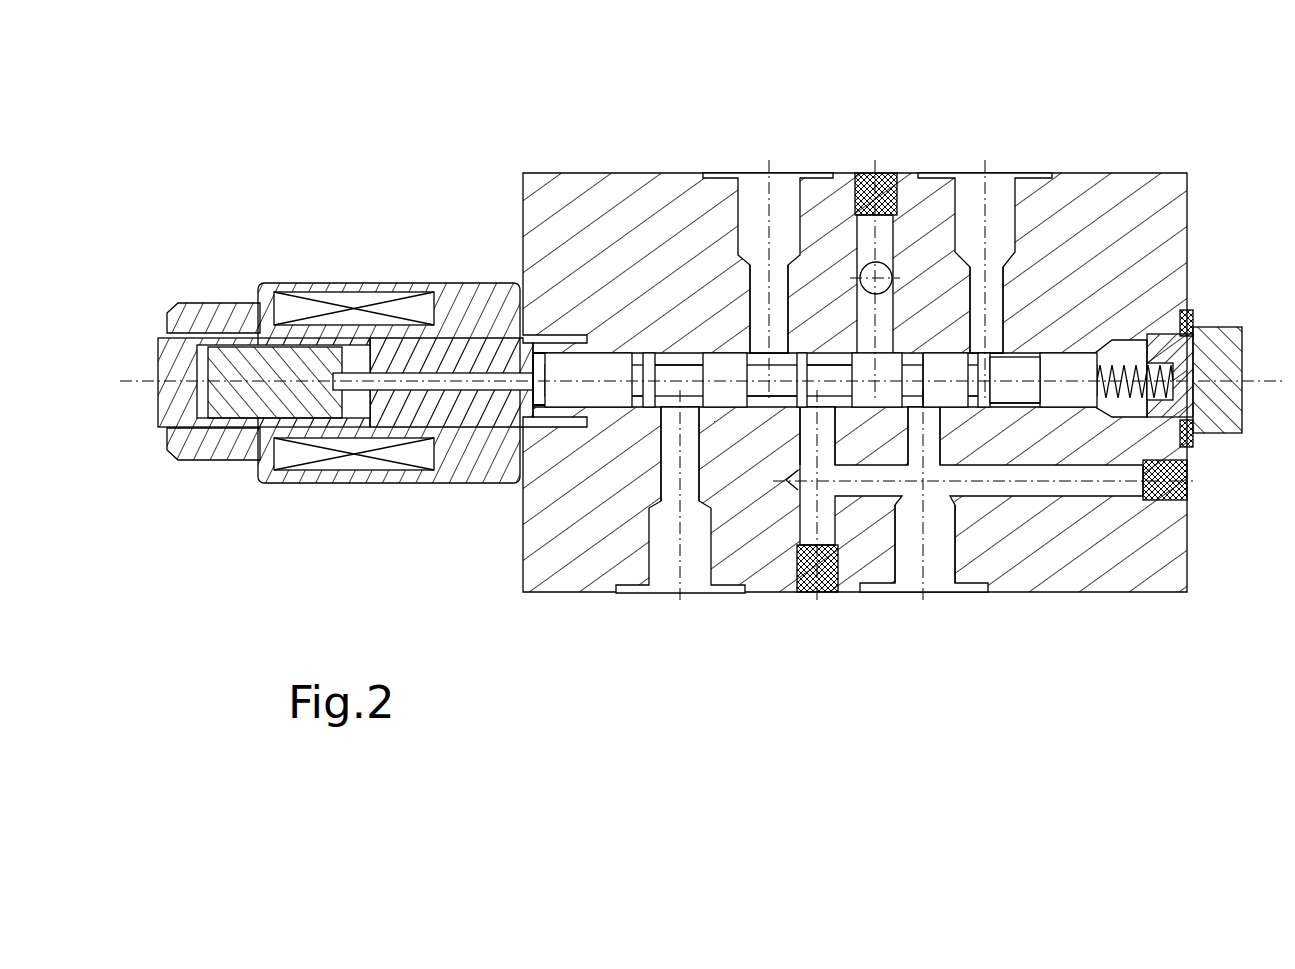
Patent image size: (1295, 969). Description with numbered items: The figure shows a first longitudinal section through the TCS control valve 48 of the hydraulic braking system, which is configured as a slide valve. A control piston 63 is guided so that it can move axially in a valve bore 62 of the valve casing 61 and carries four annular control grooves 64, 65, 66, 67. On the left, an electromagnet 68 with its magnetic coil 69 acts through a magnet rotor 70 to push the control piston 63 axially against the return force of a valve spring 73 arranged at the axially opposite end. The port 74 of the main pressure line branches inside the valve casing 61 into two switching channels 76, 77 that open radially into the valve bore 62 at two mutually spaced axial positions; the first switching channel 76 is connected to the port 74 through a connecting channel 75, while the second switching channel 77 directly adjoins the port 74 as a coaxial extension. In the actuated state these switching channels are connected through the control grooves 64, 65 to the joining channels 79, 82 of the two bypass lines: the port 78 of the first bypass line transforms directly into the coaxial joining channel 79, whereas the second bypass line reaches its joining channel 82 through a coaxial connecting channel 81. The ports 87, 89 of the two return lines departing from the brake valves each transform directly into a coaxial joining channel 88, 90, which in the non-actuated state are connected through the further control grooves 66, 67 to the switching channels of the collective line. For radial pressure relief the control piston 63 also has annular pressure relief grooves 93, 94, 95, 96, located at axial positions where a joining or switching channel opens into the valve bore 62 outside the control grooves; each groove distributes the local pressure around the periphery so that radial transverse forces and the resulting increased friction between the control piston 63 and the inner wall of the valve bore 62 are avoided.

The TCS control valve 48 is at (452, 166).
The valve casing 61 is at (583, 205).
The valve bore 62 is at (1105, 357).
The control piston 63 is at (1103, 407).
The control groove 64 is at (807, 437).
The control groove 65 is at (875, 415).
The control groove 66 is at (683, 357).
The control groove 67 is at (1010, 407).
The electromagnet 68 is at (352, 513).
The magnetic coil 69 is at (355, 303).
The magnet rotor 70 is at (250, 397).
The valve spring 73 is at (1137, 343).
The port of the main pressure line 74 is at (940, 567).
The connecting channel 75 is at (888, 488).
The first switching channel 76 is at (773, 407).
The second switching channel 77 is at (933, 433).
The port of the first bypass line 78 is at (757, 200).
The joining channel 79 is at (760, 310).
The connecting channel 81 is at (880, 320).
The joining channel 82 is at (890, 285).
The port of the return line 87 is at (670, 568).
The joining channel 88 is at (666, 470).
The port of the return line 89 is at (1000, 197).
The joining channel 90 is at (997, 308).
The pressure relief groove 93 is at (817, 357).
The pressure relief groove 94 is at (923, 357).
The pressure relief groove 95 is at (650, 407).
The pressure relief groove 96 is at (970, 407).